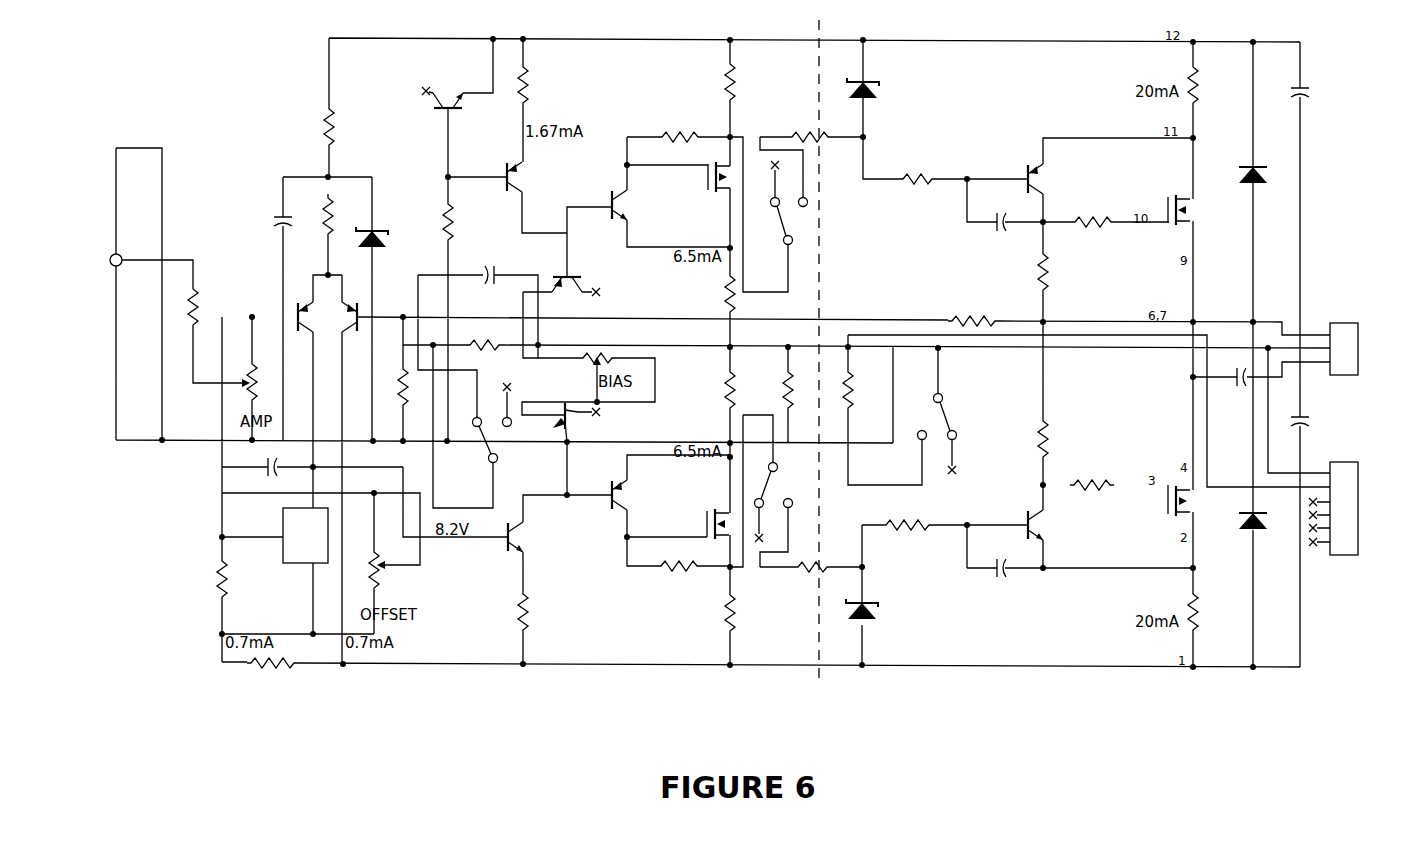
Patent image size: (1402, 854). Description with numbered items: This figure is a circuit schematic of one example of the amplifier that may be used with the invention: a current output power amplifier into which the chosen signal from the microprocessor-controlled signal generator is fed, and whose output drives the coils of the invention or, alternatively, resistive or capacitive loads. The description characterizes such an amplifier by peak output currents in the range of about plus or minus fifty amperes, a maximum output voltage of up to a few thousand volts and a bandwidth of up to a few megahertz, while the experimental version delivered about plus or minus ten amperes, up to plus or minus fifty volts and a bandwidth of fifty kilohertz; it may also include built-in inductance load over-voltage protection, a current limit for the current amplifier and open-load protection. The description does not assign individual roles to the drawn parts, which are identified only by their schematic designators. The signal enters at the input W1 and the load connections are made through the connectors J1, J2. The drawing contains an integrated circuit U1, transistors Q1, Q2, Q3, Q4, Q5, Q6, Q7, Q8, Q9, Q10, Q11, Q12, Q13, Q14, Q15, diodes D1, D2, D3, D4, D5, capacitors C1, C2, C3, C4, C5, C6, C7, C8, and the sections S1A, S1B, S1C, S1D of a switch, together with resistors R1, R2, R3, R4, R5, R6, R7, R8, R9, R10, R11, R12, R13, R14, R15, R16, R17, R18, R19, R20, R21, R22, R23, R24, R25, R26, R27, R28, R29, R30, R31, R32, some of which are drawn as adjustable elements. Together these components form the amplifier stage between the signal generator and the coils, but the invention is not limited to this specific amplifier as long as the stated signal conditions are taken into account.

The input connector W1 is at (119, 257).
The resistor 1K R17 is at (180, 314).
The potentiometer 1K AMP R21 is at (262, 382).
The resistor 1K R6 is at (308, 124).
The resistor 10.0K R4 is at (320, 216).
The capacitor 4.7/25 C1 is at (253, 207).
The zener diode 1N4746ACT D1 is at (387, 246).
The resistor 10K R5 is at (463, 222).
The transistor ZTX853 Q8 is at (446, 85).
The resistor 4.7K R12 is at (542, 85).
The transistor ZTX953 Q1 is at (549, 178).
The transistor TIP31CGE Q5 is at (616, 213).
The resistor 2K R8 is at (680, 122).
The MOSFET IRF530 Q14 is at (692, 185).
The resistor 100.0 R2 is at (752, 83).
The transistor TIP30CGE Q12 is at (599, 271).
The capacitor 1000P C8 is at (481, 276).
The resistor 2K R19 is at (485, 332).
The resistor 2K R20 is at (419, 387).
The switch SPDT S1D is at (474, 442).
The potentiometer 1K BIAS R24 is at (584, 359).
The transistor TIP32CGE Q11 is at (599, 424).
The transistor ZTX853 Q13 is at (549, 535).
The resistor 5.0K R23 is at (505, 612).
The transistor TIP32CGE Q6 is at (626, 503).
The MOSFET IRF9530 Q15 is at (688, 533).
The resistor 2K R7 is at (679, 579).
The resistor 100.0 R3 is at (751, 613).
The resistor 49.9 R31 is at (706, 294).
The resistor 49.9 R29 is at (745, 390).
The resistor 1K R25 is at (803, 390).
The resistor 49.9 R30 is at (864, 390).
The resistor 100 R9 is at (810, 122).
The switch SPDT S1B is at (791, 216).
The zener diode 1N4744ACT D2 is at (908, 84).
The resistor 56 R13 is at (918, 192).
The transistor TIP32CGE Q7 is at (993, 166).
The capacitor 2200 C4 is at (996, 224).
The resistor 56 R15 is at (1093, 210).
The MOSFET IRFP140 Q2 is at (1177, 224).
The resistor 200 R27 is at (1059, 272).
The resistor 1.0 R1 is at (1207, 85).
The diode FR802 D5 is at (1230, 180).
The capacitor 33/50 C2 is at (1310, 85).
The resistor 100K R32 is at (974, 320).
The switch SPDT S1C is at (950, 428).
The switch SPDT S1A is at (795, 497).
The resistor 100 R11 is at (813, 565).
The zener diode 1N4744ACT D3 is at (907, 610).
The resistor 75 R14 is at (908, 538).
The transistor TIP31CGE Q4 is at (992, 511).
The capacitor 2200 C5 is at (996, 570).
The resistor 200 R28 is at (1059, 438).
The resistor 56 R16 is at (1092, 473).
The MOSFET IRFP9140 Q3 is at (1138, 506).
The diode FR802 D4 is at (1237, 530).
The resistor 1.0 R10 is at (1210, 612).
The capacitor 1.0 C7 is at (1229, 376).
The capacitor 33/50 C3 is at (1312, 416).
The I_OUTPUT connector J1 is at (1327, 352).
The V_OUTPUT connector J2 is at (1330, 511).
The LM234 current source U1 is at (290, 542).
The resistor 200 R18 is at (202, 579).
The potentiometer 1K OFFSET R22 is at (389, 574).
The resistor 1K R26 is at (268, 669).
The capacitor 1000 C6 is at (271, 463).
The transistor ZTX953 Q9 is at (276, 303).
The transistor ZTX953 Q10 is at (373, 303).